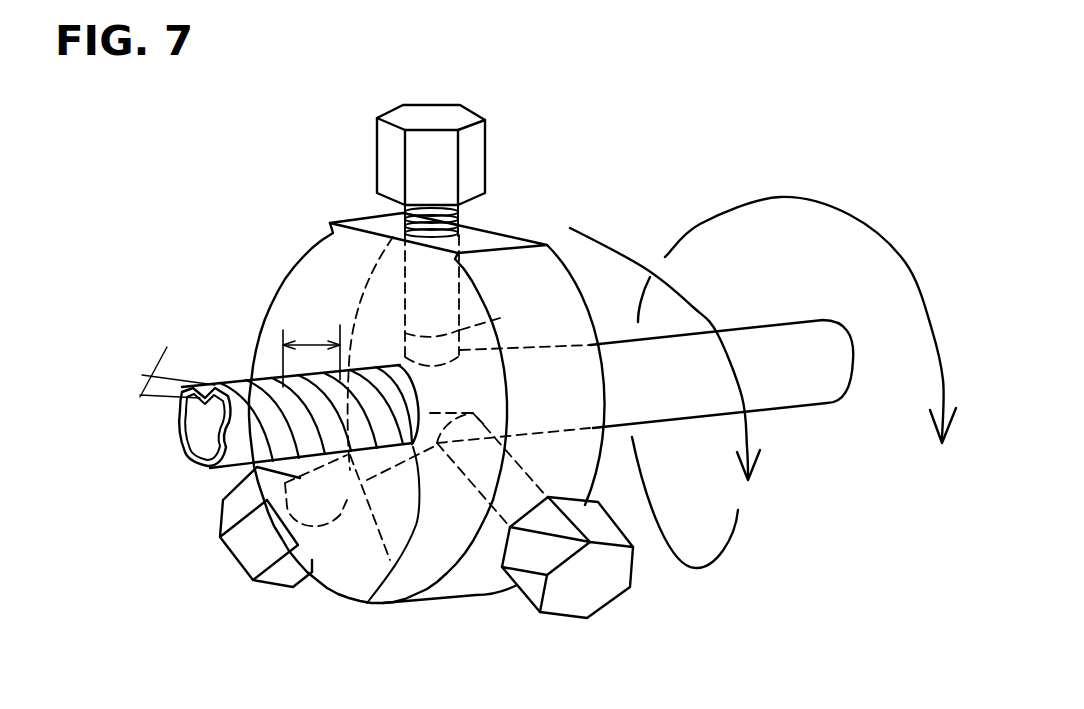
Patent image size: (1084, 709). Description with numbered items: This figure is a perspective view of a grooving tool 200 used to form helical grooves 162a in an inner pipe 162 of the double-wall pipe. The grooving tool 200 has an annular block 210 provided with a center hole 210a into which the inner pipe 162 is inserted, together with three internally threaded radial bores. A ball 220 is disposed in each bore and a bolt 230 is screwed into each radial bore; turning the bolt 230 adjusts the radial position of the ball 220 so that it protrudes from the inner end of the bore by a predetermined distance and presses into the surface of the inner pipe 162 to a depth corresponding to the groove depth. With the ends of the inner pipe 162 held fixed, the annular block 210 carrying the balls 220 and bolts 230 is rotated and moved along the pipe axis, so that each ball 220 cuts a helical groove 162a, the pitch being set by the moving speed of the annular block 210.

The grooving tool 200 is at (342, 207).
The annular block 210 is at (325, 247).
The center hole 210a is at (366, 605).
The ball 220 is at (485, 350).
The bolt 230 is at (443, 153).
The inner pipe 162 is at (233, 377).
The helical groove 162a is at (270, 428).